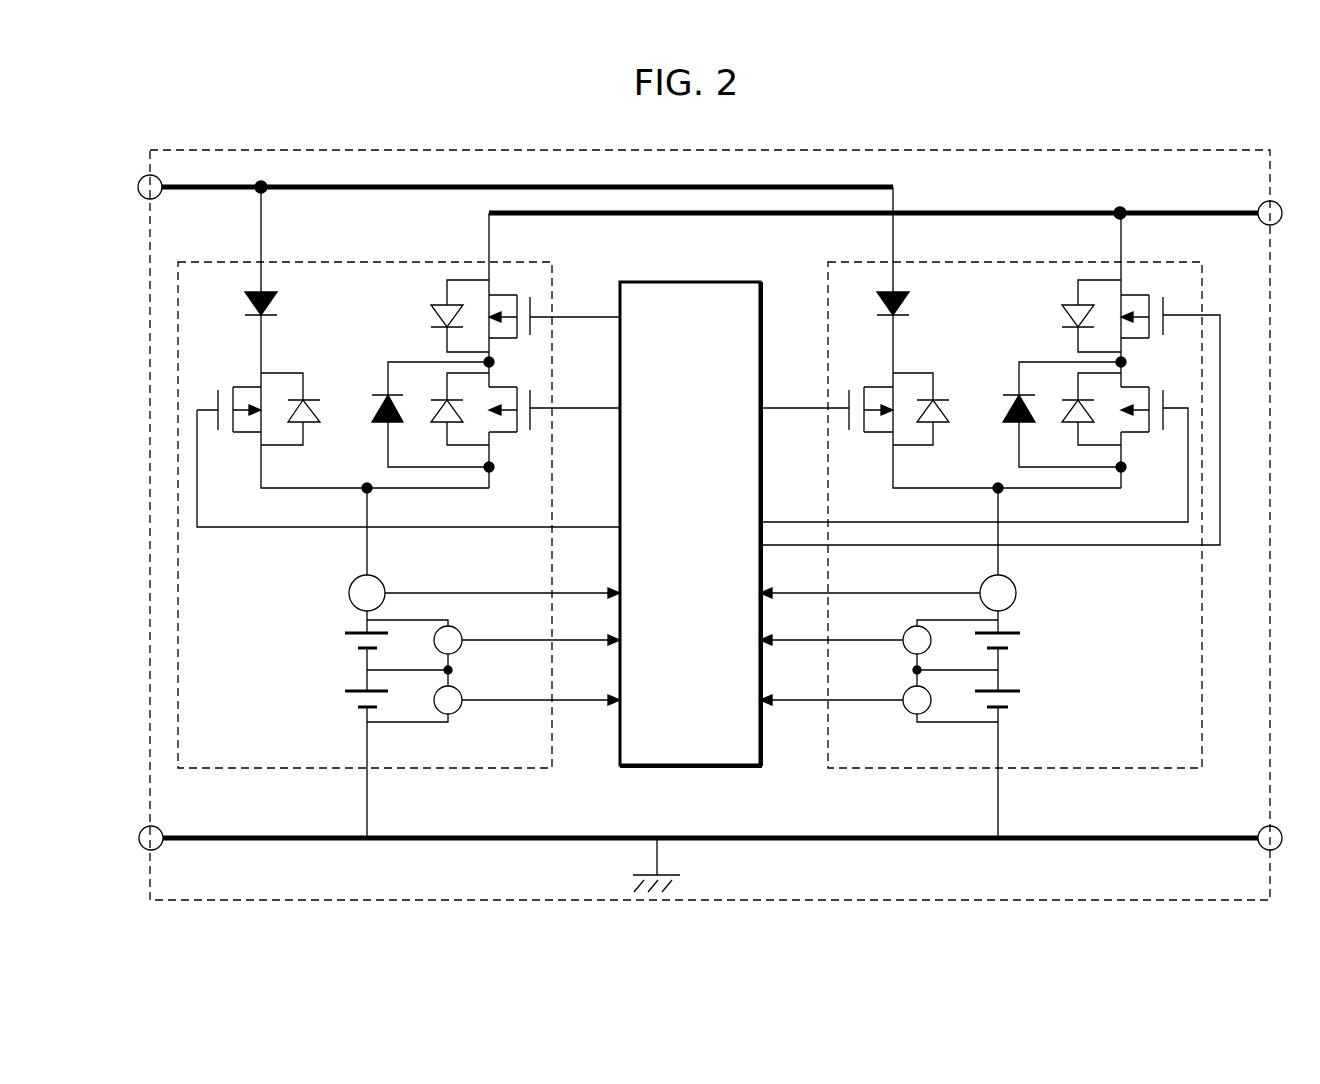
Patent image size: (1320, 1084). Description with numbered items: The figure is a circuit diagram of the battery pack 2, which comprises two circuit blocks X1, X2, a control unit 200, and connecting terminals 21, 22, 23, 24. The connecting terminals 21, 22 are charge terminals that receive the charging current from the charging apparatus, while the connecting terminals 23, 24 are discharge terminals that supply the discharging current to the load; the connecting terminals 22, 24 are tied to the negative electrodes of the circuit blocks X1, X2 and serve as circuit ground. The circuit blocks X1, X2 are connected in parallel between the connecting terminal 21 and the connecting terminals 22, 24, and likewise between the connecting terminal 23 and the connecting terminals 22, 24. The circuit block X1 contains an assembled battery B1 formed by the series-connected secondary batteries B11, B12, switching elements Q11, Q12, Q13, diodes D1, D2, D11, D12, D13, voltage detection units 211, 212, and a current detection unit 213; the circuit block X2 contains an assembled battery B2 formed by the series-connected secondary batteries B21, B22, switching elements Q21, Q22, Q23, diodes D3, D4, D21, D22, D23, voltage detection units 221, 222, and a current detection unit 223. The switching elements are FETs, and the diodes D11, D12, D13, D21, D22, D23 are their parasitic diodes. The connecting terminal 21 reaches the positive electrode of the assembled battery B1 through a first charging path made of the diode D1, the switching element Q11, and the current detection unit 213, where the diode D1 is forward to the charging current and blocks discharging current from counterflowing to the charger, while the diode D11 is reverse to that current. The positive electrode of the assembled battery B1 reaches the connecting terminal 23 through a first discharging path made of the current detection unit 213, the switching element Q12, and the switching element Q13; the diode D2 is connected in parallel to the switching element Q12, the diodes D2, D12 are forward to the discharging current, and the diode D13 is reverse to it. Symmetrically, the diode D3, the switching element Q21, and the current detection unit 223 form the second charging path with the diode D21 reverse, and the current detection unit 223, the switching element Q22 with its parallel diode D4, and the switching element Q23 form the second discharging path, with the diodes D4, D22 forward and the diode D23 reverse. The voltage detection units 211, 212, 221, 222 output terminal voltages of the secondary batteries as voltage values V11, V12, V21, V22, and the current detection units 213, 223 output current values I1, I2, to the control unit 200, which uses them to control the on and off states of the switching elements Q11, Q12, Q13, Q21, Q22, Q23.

The battery pack 2 is at (872, 150).
The connecting terminal 21 is at (142, 178).
The connecting terminal 22 is at (145, 849).
The connecting terminal 23 is at (1279, 201).
The connecting terminal 24 is at (1281, 848).
The control unit 200 is at (715, 282).
The circuit block X1 is at (178, 645).
The circuit block X2 is at (1203, 643).
The assembled battery B1 is at (292, 734).
The secondary battery B11 is at (345, 645).
The secondary battery B12 is at (328, 700).
The assembled battery B2 is at (1074, 734).
The secondary battery B21 is at (1021, 645).
The secondary battery B22 is at (1035, 700).
The switching element Q11 is at (243, 387).
The switching element Q12 is at (505, 432).
The switching element Q13 is at (496, 294).
The switching element Q21 is at (878, 387).
The switching element Q22 is at (1135, 432).
The switching element Q23 is at (1134, 293).
The diode D1 is at (279, 303).
The diode D2 is at (380, 397).
The diode D3 is at (910, 303).
The diode D4 is at (1010, 397).
The diode D11 is at (310, 425).
The diode D12 is at (441, 424).
The diode D13 is at (430, 318).
The diode D21 is at (942, 425).
The diode D22 is at (1065, 424).
The diode D23 is at (1062, 318).
The voltage detection unit 211 is at (462, 630).
The voltage detection unit 212 is at (462, 711).
The current detection unit 213 is at (352, 582).
The voltage detection unit 221 is at (903, 630).
The voltage detection unit 222 is at (903, 711).
The current detection unit 223 is at (1016, 582).
The current value I1 is at (502, 581).
The current value I2 is at (870, 581).
The voltage value V11 is at (541, 629).
The voltage value V12 is at (541, 689).
The voltage value V21 is at (831, 628).
The voltage value V22 is at (831, 689).